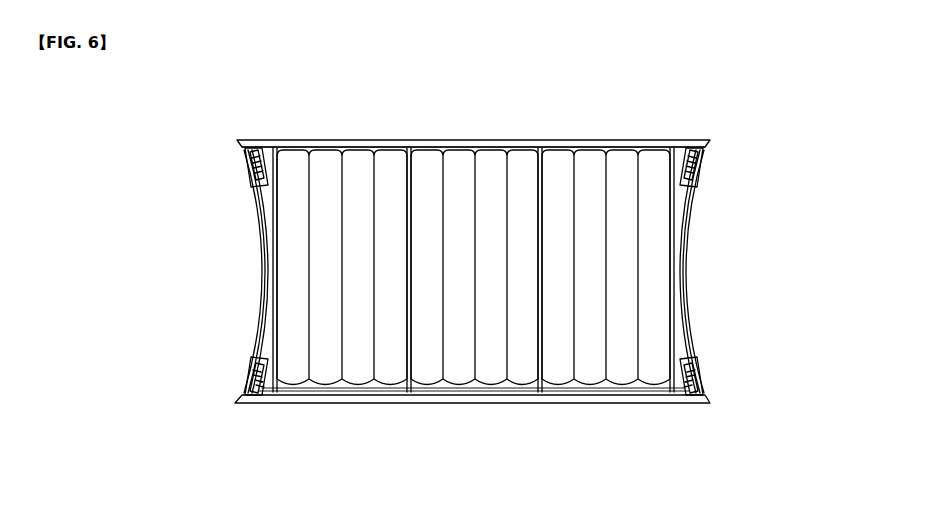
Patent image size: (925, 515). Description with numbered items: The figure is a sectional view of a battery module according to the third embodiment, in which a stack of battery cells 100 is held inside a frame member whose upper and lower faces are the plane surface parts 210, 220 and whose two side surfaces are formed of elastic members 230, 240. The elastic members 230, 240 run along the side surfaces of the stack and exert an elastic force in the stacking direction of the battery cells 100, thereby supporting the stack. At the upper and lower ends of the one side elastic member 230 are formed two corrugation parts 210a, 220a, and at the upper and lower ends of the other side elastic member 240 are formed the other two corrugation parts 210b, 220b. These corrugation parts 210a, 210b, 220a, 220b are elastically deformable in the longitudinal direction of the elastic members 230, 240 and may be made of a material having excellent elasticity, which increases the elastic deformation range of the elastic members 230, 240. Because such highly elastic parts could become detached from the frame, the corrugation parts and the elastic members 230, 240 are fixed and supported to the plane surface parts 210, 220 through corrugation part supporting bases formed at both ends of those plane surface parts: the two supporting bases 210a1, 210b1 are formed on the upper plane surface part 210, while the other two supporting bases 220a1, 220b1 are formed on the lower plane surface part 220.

The battery cell 100 is at (365, 245).
The upper plane surface part 210 is at (634, 140).
The corrugation part 210a is at (248, 172).
The corrugation part supporting base 210a1 is at (253, 160).
The corrugation part 210b is at (690, 178).
The corrugation part supporting base 210b1 is at (695, 165).
The lower plane surface part 220 is at (428, 404).
The corrugation part 220a is at (248, 376).
The corrugation part supporting base 220a1 is at (253, 362).
The corrugation part 220b is at (699, 375).
The corrugation part supporting base 220b1 is at (692, 362).
The elastic member 230 is at (262, 284).
The elastic member 240 is at (684, 265).